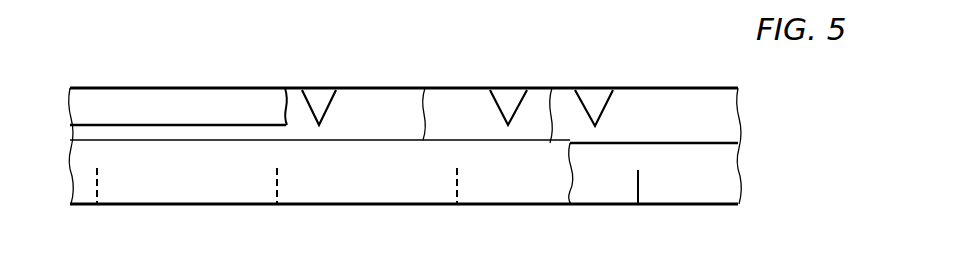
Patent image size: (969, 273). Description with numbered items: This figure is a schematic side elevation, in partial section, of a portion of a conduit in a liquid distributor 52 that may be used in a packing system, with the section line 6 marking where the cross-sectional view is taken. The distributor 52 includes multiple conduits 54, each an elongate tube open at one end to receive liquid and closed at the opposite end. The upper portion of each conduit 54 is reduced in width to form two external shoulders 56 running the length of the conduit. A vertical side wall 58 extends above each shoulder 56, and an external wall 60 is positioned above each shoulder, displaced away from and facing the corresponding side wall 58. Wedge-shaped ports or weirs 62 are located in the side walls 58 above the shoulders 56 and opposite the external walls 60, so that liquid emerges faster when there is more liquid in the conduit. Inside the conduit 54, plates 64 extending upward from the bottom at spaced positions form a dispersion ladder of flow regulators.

The section line 6- 6 is at (42, 56).
The distributor 52 is at (542, 71).
The conduit 54 is at (375, 207).
The external shoulder 56 is at (425, 88).
The vertical side wall 58 is at (370, 107).
The external wall 60 is at (245, 103).
The port or weir 62 is at (321, 90).
The plate 64 is at (640, 182).